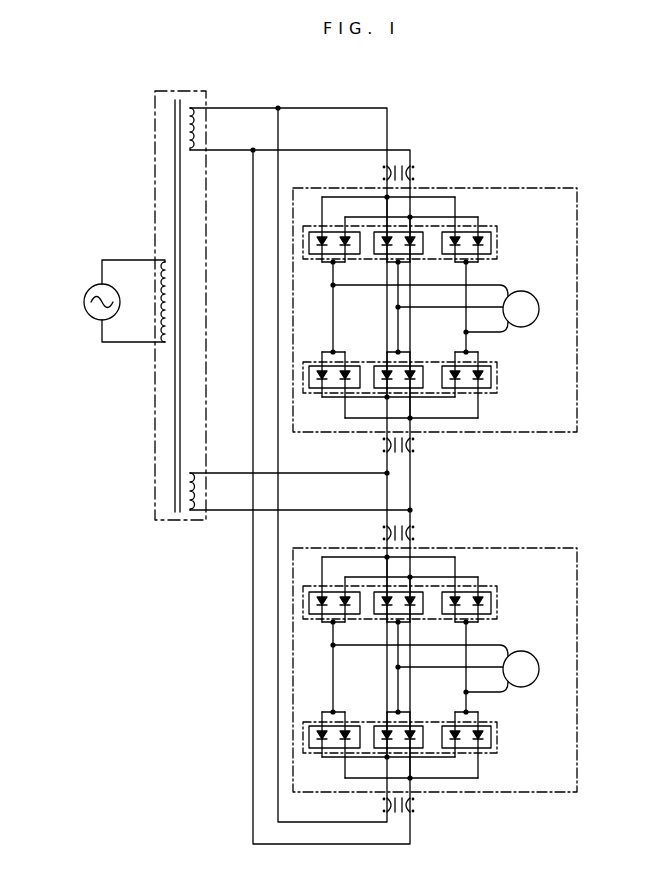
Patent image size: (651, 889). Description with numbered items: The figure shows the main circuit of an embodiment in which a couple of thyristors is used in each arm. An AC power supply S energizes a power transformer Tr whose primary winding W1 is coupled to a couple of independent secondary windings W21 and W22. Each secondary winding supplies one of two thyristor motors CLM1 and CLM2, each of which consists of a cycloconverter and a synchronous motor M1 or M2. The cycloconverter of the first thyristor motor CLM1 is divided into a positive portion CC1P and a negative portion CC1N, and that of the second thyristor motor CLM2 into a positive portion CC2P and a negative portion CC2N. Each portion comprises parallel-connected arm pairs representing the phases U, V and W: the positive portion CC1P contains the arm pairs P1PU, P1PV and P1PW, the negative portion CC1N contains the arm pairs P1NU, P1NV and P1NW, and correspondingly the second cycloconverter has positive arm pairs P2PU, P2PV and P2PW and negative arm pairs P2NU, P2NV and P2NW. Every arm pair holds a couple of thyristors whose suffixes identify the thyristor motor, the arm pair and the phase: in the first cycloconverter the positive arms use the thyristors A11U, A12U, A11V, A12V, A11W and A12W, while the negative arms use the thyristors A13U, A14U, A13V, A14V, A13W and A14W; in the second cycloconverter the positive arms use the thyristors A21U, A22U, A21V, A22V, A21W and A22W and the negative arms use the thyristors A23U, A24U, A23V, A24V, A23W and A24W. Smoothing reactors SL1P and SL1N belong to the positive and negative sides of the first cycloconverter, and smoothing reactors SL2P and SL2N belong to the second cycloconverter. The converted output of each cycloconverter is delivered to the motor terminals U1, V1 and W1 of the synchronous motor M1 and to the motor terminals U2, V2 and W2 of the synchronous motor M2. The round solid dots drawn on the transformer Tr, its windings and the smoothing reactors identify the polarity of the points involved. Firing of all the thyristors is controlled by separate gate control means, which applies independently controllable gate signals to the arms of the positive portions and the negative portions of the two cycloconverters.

The power transformer Tr is at (172, 90).
The AC power supply S is at (83, 302).
The primary winding W1 is at (161, 297).
The secondary winding W21 is at (198, 139).
The secondary winding W22 is at (198, 499).
The first thyristor motor CLM1 is at (525, 195).
The second thyristor motor CLM2 is at (435, 659).
The smoothing reactor SL1P is at (413, 177).
The smoothing reactor SL1N is at (413, 449).
The smoothing reactor SL2P is at (422, 534).
The smoothing reactor SL2N is at (424, 820).
The positive portion of cycloconverter CC1P is at (497, 252).
The negative portion of cycloconverter CC1N is at (497, 383).
The positive portion of cycloconverter CC2P is at (427, 607).
The negative portion of cycloconverter CC2N is at (423, 739).
The arm pair P1PU is at (360, 252).
The arm pair P1PV is at (423, 252).
The arm pair P1PW is at (491, 252).
The arm pair P1NU is at (359, 366).
The arm pair P1NV is at (424, 366).
The arm pair P1NW is at (492, 366).
The arm pair P2PU is at (345, 620).
The arm pair P2PV is at (415, 620).
The arm pair P2PW is at (487, 620).
The arm pair P2NU is at (342, 719).
The arm pair P2NV is at (413, 725).
The arm pair P2NW is at (488, 723).
The thyristor A11U is at (317, 245).
The thyristor A12U is at (340, 245).
The thyristor A11V is at (382, 245).
The thyristor A12V is at (405, 245).
The thyristor A11W is at (450, 245).
The thyristor A12W is at (473, 245).
The thyristor A13U is at (340, 379).
The thyristor A14U is at (317, 379).
The thyristor A13V is at (405, 379).
The thyristor A14V is at (382, 379).
The thyristor A13W is at (473, 379).
The thyristor A14W is at (450, 379).
The thyristor A21U is at (308, 575).
The thyristor A22U is at (349, 575).
The thyristor A21V is at (372, 589).
The thyristor A22V is at (429, 593).
The thyristor A21W is at (478, 589).
The thyristor A22W is at (511, 599).
The thyristor A23U is at (346, 764).
The thyristor A24U is at (307, 764).
The thyristor A23V is at (429, 747).
The thyristor A24V is at (368, 747).
The thyristor A23W is at (501, 745).
The thyristor A24W is at (471, 764).
The motor terminal U1 is at (334, 285).
The motor terminal V1 is at (398, 307).
The synchronous motor M1 is at (540, 311).
The motor terminal U2 is at (405, 646).
The motor terminal V2 is at (436, 668).
The motor terminal W2 is at (469, 692).
The synchronous motor M2 is at (535, 669).